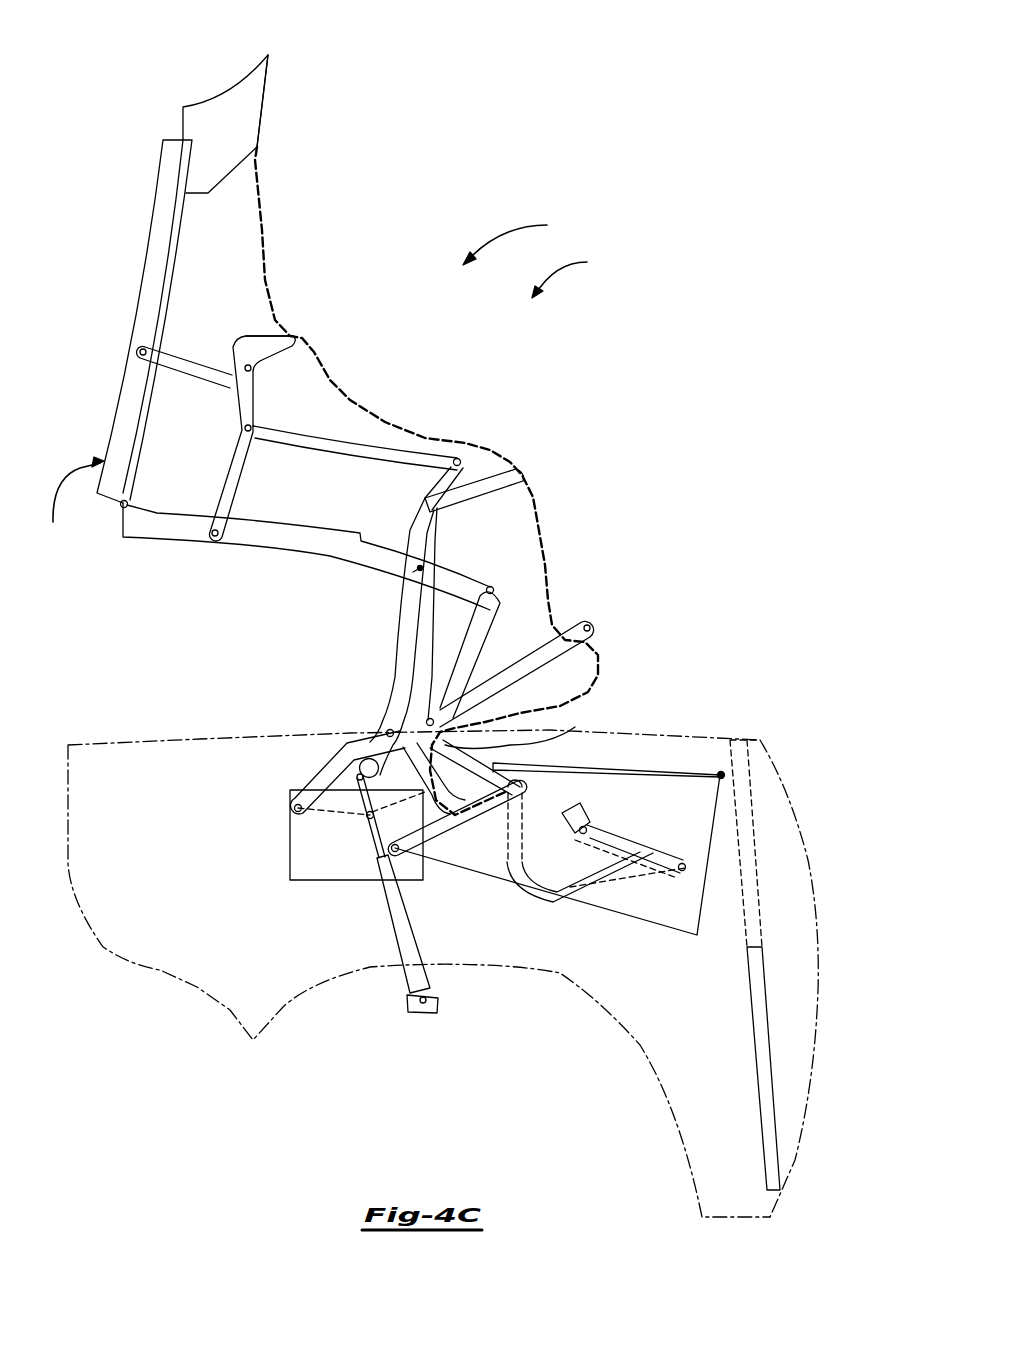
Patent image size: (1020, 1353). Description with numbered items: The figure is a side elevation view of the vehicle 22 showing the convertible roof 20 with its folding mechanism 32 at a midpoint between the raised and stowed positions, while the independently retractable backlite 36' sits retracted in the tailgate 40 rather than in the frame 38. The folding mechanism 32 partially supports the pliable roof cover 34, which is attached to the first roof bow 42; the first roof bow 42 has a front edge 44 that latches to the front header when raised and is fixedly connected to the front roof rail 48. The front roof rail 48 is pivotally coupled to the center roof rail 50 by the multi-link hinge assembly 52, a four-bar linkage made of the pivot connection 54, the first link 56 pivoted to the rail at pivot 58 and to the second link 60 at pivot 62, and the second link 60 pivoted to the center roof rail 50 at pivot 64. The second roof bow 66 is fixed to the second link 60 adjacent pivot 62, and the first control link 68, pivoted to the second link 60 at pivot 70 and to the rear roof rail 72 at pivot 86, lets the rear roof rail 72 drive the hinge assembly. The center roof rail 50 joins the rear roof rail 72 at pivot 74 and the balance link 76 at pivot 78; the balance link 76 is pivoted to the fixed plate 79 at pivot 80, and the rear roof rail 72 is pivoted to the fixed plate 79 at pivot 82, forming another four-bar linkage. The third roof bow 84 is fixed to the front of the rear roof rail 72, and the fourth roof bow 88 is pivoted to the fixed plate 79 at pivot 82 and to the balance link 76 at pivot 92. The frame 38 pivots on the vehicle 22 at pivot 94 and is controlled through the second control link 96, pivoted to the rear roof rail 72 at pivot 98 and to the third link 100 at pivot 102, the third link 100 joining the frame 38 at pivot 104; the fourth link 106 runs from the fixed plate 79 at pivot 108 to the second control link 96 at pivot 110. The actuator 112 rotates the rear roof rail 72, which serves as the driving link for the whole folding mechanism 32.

The convertible roof 20 is at (575, 275).
The vehicle 22 is at (648, 1030).
The folding mechanism 32 is at (519, 241).
The roof cover 34 is at (266, 200).
The backlite 36' is at (766, 965).
The frame 38 is at (617, 790).
The tailgate 40 is at (812, 838).
The first roof bow 42 is at (262, 115).
The front edge 44 is at (255, 58).
The front roof rail 48 is at (150, 262).
The center roof rail 50 is at (337, 557).
The multi-link hinge assembly 52 is at (73, 499).
The pivot connection 54 is at (122, 508).
The first link 56 is at (205, 378).
The pivot 58 is at (141, 356).
The second link 60 is at (238, 485).
The pivot 62 is at (252, 372).
The pivot 64 is at (213, 538).
The second roof bow 66 is at (287, 336).
The first control link 68 is at (375, 440).
The pivot 70 is at (243, 428).
The rear roof rail 72 is at (410, 635).
The pivot 74 is at (410, 575).
The balance link 76 is at (500, 605).
The pivot 78 is at (490, 586).
The fixed plate 79 is at (332, 873).
The pivot 80 is at (365, 820).
The pivot 82 is at (296, 808).
The third roof bow 84 is at (521, 473).
The pivot 86 is at (457, 460).
The fourth roof bow 88 is at (586, 622).
The pivot 92 is at (428, 718).
The pivot 94 is at (722, 775).
The second control link 96 is at (562, 728).
The pivot 98 is at (388, 732).
The third link 100 is at (653, 850).
The pivot 102 is at (685, 872).
The pivot 104 is at (590, 823).
The fourth link 106 is at (467, 817).
The pivot 108 is at (400, 852).
The pivot 110 is at (593, 768).
The actuator 112 is at (390, 925).